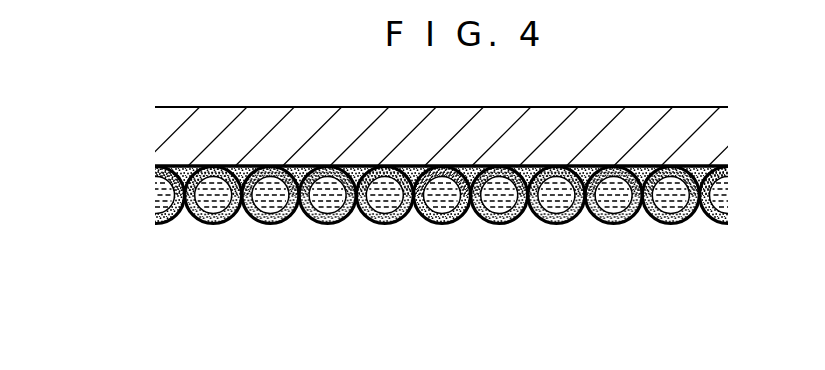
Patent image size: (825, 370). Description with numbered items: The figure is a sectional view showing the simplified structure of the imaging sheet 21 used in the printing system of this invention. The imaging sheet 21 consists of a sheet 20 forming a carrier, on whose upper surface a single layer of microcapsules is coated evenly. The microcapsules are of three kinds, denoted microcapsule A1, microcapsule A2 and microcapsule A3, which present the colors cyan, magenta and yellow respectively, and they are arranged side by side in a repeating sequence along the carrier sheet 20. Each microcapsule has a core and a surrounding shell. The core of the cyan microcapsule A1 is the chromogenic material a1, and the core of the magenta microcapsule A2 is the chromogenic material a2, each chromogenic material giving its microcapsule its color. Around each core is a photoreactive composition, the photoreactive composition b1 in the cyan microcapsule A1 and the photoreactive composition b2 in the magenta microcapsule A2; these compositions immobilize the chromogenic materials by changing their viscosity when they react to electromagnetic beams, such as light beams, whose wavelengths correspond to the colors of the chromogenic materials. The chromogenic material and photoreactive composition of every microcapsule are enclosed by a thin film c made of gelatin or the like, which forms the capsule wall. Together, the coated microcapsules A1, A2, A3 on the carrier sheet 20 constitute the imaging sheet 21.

The sheet forming carrier 20 is at (597, 115).
The imaging sheet 21 is at (740, 148).
The microcapsule presenting cyan A1 is at (565, 262).
The microcapsule presenting magenta A2 is at (246, 218).
The microcapsule presenting yellow A3 is at (306, 220).
The chromogenic material a1 is at (193, 216).
The chromogenic material a2 is at (254, 215).
The photoreactive composition b1 is at (212, 209).
The photoreactive composition b2 is at (270, 210).
The thin film c is at (228, 216).